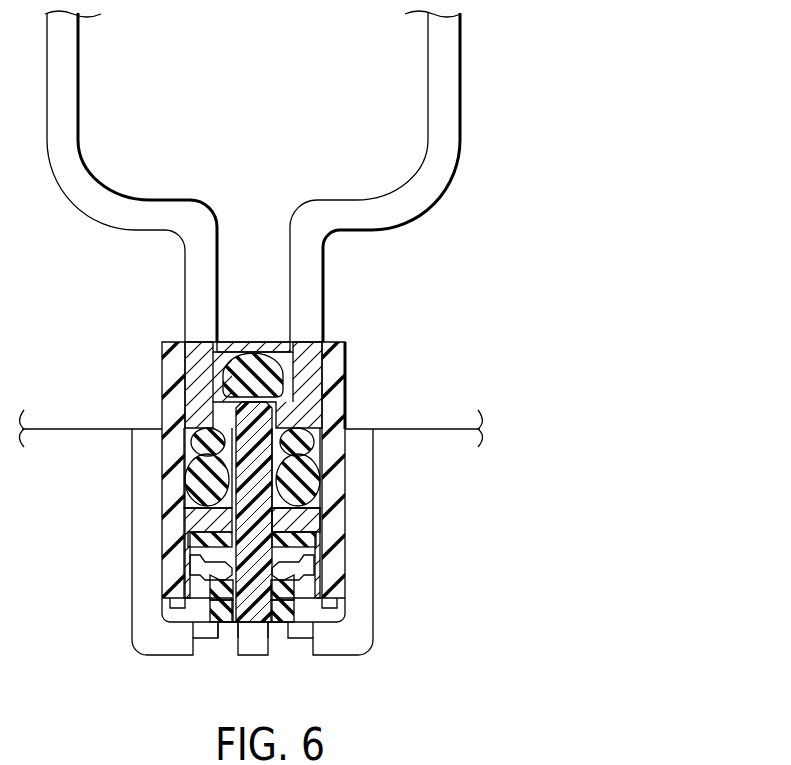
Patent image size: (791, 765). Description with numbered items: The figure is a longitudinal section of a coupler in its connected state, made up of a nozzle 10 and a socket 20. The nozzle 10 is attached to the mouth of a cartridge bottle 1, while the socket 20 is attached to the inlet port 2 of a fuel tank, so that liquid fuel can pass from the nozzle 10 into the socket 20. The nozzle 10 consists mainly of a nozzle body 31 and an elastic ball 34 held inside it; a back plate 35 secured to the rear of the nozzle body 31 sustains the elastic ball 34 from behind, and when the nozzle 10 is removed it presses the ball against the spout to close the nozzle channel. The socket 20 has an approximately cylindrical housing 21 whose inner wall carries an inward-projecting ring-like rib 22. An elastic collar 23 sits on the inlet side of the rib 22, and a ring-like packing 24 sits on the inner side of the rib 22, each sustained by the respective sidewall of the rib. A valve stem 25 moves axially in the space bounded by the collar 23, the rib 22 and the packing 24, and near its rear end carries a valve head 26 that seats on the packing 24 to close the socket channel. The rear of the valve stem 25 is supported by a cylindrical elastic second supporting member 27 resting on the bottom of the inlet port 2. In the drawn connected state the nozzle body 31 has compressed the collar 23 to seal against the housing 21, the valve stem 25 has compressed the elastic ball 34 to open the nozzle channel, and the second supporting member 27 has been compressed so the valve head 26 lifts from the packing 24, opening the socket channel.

The cartridge bottle 1 is at (452, 88).
The inlet port of fuel tank 2 is at (358, 608).
The nozzle 10 is at (352, 316).
The socket 20 is at (372, 393).
The housing 21 is at (190, 540).
The ring-like rib 22 is at (308, 520).
The collar 23 is at (188, 477).
The ring-like packing 24 is at (190, 556).
The valve stem 25 is at (190, 440).
The valve head 26 is at (188, 578).
The second supporting member 27 is at (213, 603).
The nozzle body 31 is at (190, 398).
The elastic ball 34 is at (225, 370).
The back plate 35 is at (248, 336).